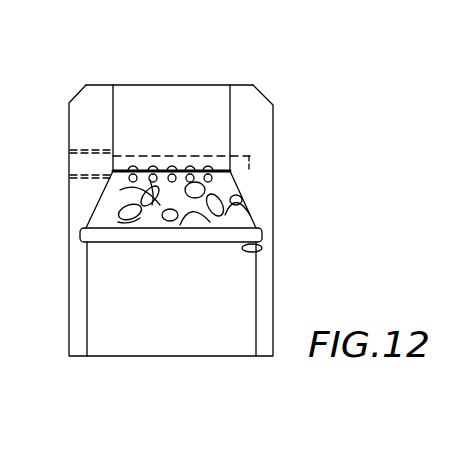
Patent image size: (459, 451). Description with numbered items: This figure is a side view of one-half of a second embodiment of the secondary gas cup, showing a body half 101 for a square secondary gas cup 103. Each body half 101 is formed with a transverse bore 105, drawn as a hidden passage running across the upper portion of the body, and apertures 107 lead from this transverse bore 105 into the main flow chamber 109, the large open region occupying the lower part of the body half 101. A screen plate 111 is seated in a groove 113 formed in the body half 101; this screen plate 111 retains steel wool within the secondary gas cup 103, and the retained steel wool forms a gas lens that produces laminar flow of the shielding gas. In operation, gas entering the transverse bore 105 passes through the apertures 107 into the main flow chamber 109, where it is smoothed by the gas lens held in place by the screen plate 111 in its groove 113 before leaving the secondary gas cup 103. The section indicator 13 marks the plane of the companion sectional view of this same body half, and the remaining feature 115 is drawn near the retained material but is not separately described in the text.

The section line 13- 13 is at (170, 78).
The body half 101 is at (260, 184).
The secondary gas cup 103 is at (293, 80).
The transverse bore 105 is at (152, 156).
The apertures 107 is at (120, 180).
The main flow chamber 109 is at (97, 327).
The screen plate 111 is at (240, 222).
The groove 113 is at (262, 250).
The lead wire 115 is at (152, 205).